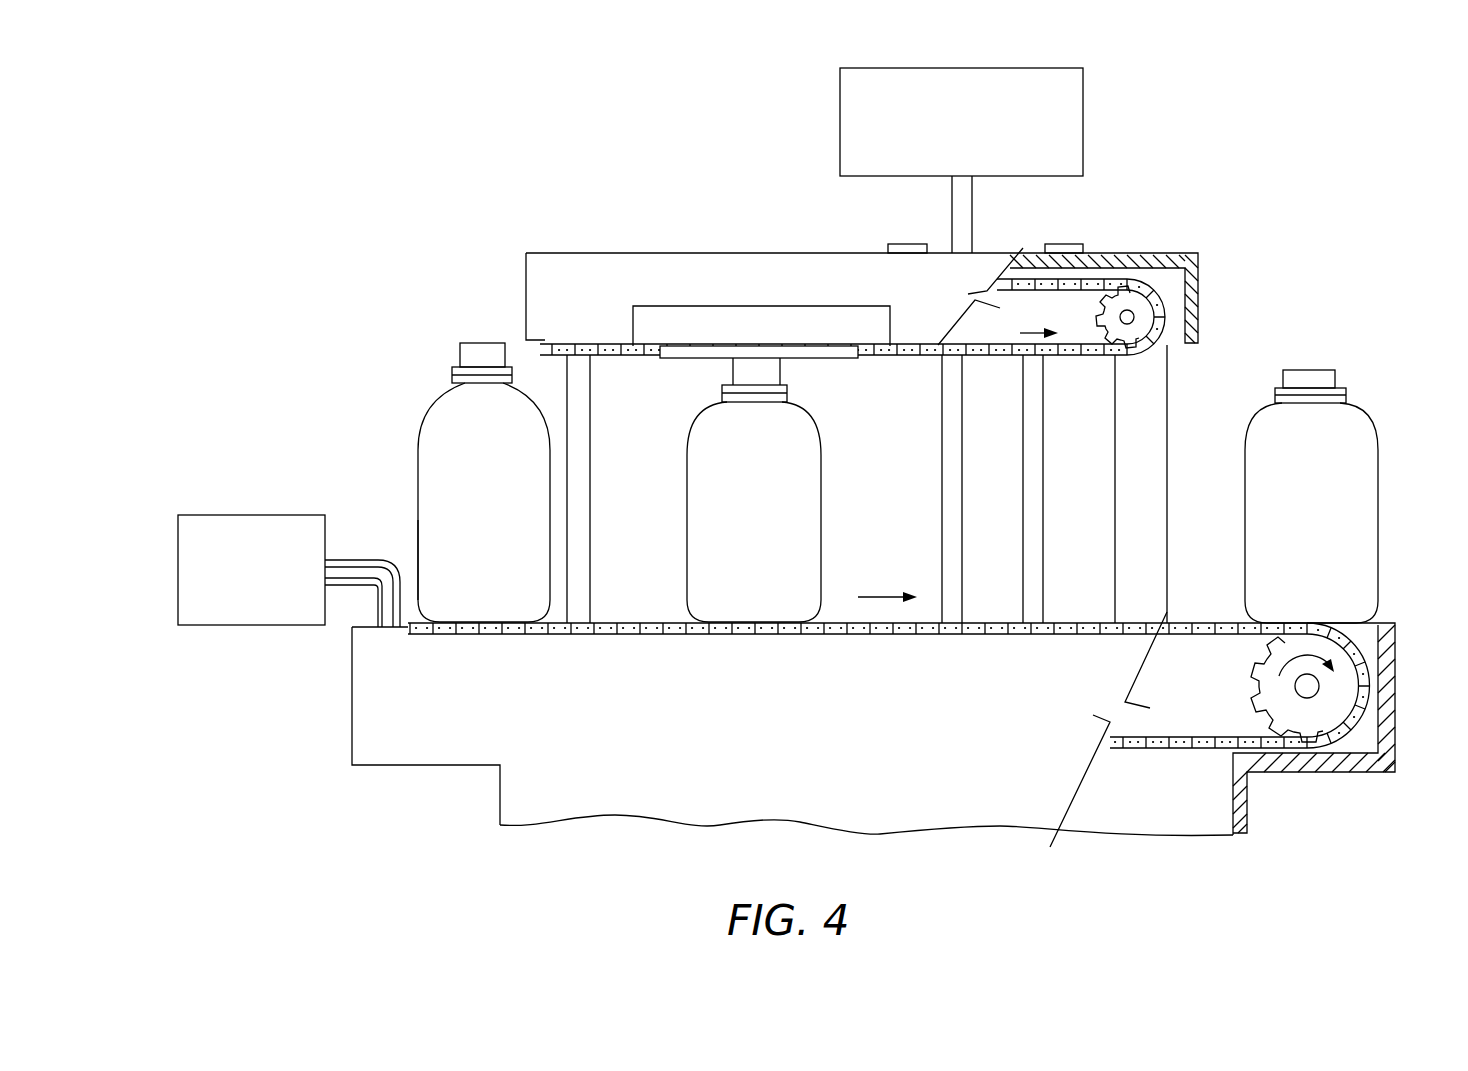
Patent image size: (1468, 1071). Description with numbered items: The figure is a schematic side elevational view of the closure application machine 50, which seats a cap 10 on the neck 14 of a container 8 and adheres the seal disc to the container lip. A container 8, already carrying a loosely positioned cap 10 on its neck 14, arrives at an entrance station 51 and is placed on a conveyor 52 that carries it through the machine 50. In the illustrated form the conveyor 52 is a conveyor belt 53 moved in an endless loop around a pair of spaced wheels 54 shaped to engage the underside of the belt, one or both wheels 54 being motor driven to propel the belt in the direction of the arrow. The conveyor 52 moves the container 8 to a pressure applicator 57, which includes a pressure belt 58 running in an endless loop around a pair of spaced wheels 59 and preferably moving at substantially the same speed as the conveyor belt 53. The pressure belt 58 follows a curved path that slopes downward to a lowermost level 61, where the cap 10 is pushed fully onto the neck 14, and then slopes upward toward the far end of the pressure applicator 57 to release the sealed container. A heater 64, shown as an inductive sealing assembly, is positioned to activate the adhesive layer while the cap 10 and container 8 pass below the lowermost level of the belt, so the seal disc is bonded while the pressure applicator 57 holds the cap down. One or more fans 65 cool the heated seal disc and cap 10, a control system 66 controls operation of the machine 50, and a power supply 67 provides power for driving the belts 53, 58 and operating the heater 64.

The container 8 is at (490, 575).
The cap 10 is at (482, 346).
The neck 14 is at (460, 392).
The closure application machine 50 is at (782, 178).
The entrance station 51 is at (410, 515).
The conveyor 52 is at (412, 643).
The conveyor belt 53 is at (493, 634).
The wheels 54 is at (1352, 678).
The pressure applicator 57 is at (596, 268).
The pressure belt 58 is at (882, 358).
The wheels 59 is at (1143, 311).
The lowermost level 61 is at (808, 360).
The heater 64 is at (788, 333).
The fans 65 is at (910, 244).
The control system 66 is at (1068, 118).
The power supply 67 is at (238, 516).